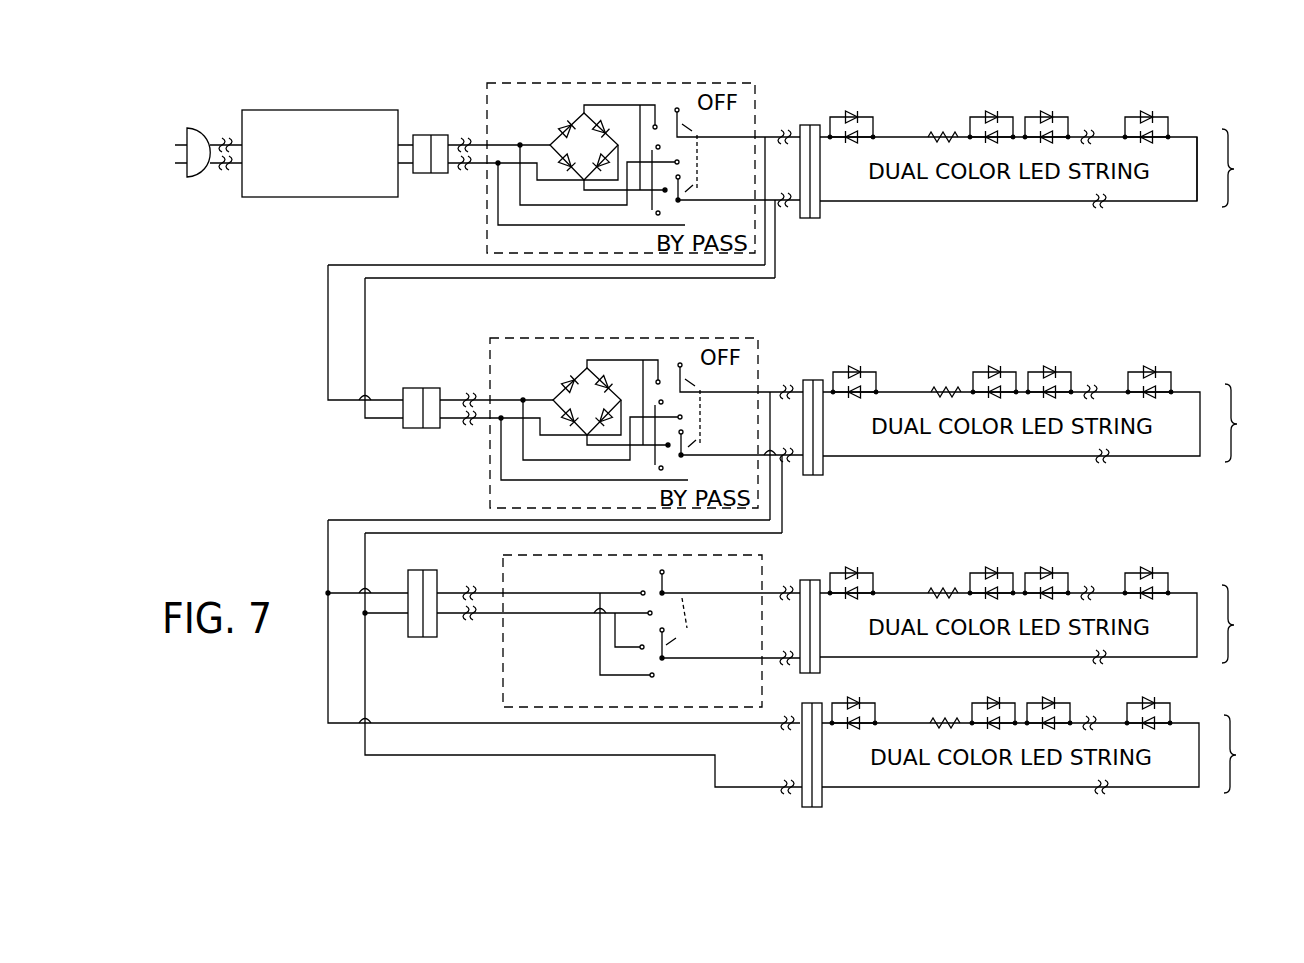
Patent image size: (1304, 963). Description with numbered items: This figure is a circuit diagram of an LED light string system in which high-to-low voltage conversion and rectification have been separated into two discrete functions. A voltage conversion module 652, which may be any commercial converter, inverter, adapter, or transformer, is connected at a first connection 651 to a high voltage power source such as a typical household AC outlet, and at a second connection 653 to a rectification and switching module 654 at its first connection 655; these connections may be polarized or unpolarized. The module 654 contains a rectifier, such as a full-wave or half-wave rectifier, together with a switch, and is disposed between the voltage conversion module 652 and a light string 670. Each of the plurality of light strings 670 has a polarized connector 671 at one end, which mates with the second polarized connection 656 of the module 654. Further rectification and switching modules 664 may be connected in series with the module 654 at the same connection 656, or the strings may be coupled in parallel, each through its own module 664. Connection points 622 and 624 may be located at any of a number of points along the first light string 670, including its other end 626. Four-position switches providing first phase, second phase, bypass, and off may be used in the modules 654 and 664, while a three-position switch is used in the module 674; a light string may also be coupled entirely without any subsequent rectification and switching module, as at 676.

The first connection 651 is at (223, 140).
The voltage conversion module 652 is at (358, 110).
The second connection 653 is at (427, 133).
The first connection 655 is at (453, 128).
The rectification and switching module 654 is at (630, 83).
The connection point 622 is at (765, 137).
The connection point 624 is at (777, 205).
The second polarized connection 656 is at (805, 125).
The polarized connector 671 is at (832, 117).
The light string 670 is at (1051, 452).
The other end of the light string 626 is at (1197, 178).
The rectification and switching module 664 is at (658, 338).
The rectification and switching module 674 is at (765, 563).
The connection without rectification and switching module 676 is at (815, 704).